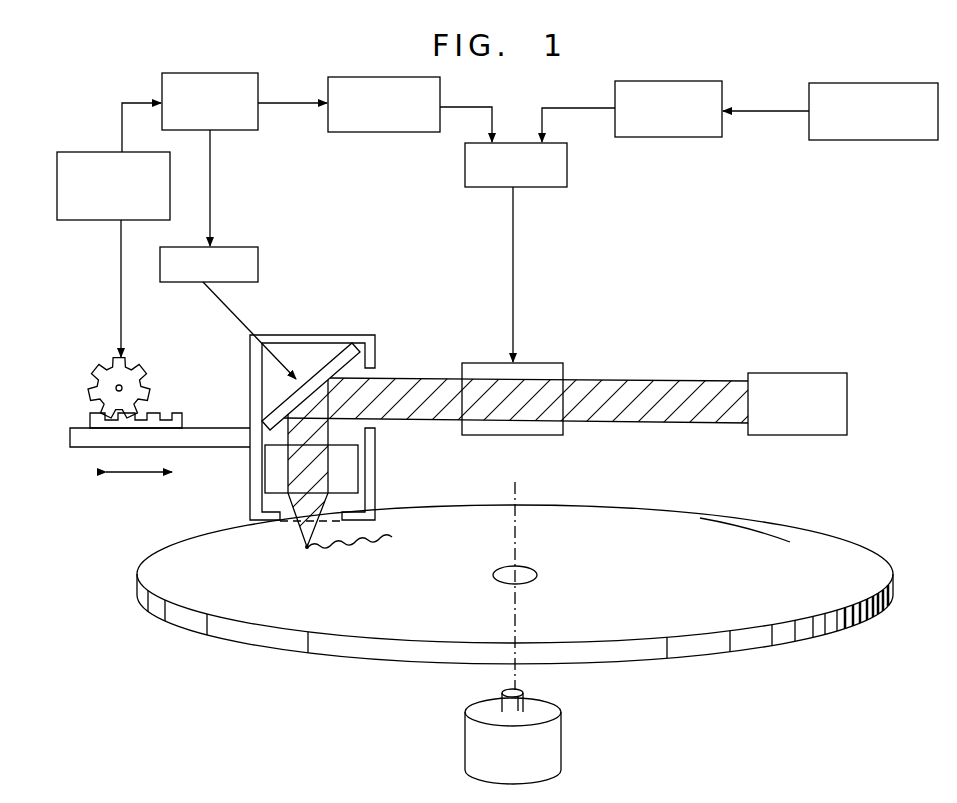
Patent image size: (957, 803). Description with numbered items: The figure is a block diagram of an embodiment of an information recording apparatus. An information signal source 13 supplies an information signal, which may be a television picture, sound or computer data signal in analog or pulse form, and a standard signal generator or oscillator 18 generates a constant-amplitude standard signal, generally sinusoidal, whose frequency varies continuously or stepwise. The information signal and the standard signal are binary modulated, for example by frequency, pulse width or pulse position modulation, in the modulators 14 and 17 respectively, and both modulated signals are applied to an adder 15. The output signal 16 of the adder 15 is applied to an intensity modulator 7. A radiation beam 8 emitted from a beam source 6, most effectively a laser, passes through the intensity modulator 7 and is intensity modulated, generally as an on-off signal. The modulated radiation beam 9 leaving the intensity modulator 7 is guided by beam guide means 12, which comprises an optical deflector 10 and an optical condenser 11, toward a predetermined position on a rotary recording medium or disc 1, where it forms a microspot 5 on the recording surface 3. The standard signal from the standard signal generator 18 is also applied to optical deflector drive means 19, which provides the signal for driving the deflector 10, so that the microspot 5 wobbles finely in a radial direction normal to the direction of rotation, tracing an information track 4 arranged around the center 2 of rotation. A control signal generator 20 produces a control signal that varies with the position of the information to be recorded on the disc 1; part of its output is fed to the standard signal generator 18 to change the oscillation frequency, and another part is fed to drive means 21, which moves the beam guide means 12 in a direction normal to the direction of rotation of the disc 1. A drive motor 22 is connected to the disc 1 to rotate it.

The rotary recording medium 1 is at (893, 570).
The center of rotation 2 is at (493, 576).
The recording surface 3 is at (790, 552).
The information track 4 is at (371, 540).
The microspot 5 is at (305, 549).
The beam source 6 is at (800, 373).
The intensity modulator 7 is at (547, 363).
The radiation beam 8 is at (650, 381).
The radiation beam 9 is at (425, 422).
The deflector 10 is at (355, 345).
The optical condenser 11 is at (358, 475).
The beam guide means 12 is at (372, 356).
The information signal source 13 is at (912, 83).
The modulator 14 is at (722, 100).
The adder 15 is at (567, 170).
The output signal 16 is at (513, 277).
The modulator 17 is at (352, 77).
The standard signal generator 18 is at (258, 90).
The optical deflector drive means 19 is at (258, 266).
The control signal generator 20 is at (170, 198).
The drive means 21 is at (103, 395).
The drive motor 22 is at (563, 737).